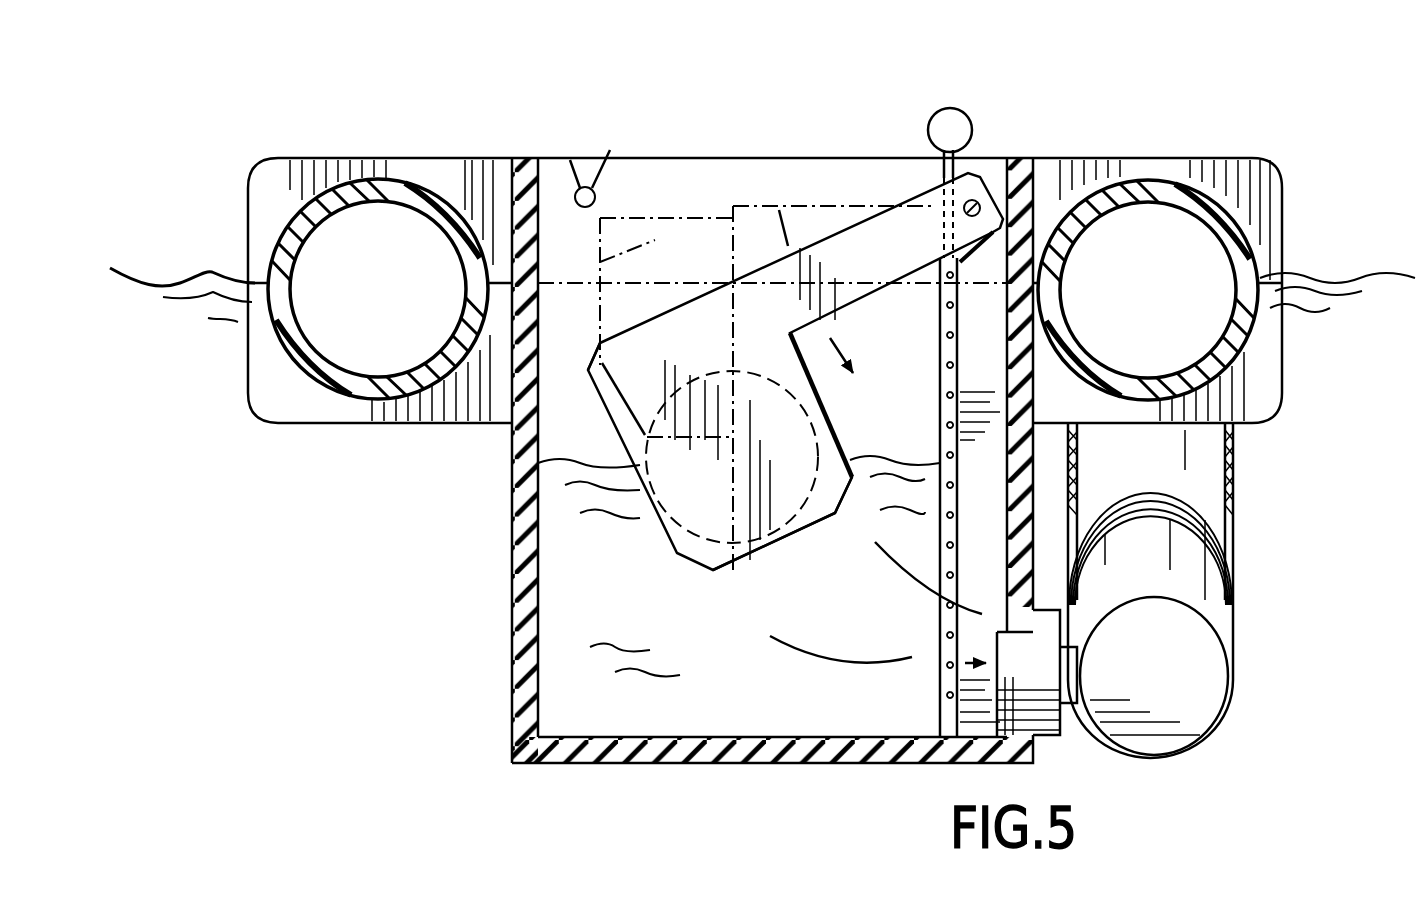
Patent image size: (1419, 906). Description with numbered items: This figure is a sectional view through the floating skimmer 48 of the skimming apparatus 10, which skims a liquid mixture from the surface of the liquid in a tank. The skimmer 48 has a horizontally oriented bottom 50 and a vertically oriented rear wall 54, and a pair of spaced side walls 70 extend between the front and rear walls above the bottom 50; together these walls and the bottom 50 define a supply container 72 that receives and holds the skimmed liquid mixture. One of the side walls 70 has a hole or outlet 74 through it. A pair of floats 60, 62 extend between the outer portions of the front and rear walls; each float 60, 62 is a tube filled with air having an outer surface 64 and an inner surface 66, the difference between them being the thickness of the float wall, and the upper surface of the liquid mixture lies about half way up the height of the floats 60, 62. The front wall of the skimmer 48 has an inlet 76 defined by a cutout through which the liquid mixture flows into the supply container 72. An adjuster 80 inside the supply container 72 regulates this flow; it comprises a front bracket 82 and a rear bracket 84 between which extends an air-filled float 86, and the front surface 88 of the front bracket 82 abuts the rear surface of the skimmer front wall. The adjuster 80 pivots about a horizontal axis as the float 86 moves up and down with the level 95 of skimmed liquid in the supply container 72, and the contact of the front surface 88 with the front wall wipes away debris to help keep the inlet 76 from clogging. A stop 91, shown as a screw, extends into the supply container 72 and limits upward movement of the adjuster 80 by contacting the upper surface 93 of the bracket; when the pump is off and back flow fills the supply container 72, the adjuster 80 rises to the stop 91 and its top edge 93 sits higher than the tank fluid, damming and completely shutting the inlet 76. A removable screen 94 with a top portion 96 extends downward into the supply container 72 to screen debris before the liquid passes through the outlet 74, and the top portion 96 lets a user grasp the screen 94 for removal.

The skimming apparatus 10 is at (1092, 103).
The floating skimmer 48 is at (500, 592).
The bottom 50 is at (690, 752).
The rear wall 54 is at (568, 688).
The float 60 is at (268, 245).
The float 62 is at (1195, 185).
The outer surface 64 is at (386, 180).
The inner surface 66 is at (310, 241).
The side walls 70 is at (512, 548).
The supply container 72 is at (692, 201).
The outlet 74 is at (1040, 750).
The inlet 76 is at (772, 388).
The adjuster 80 is at (692, 568).
The front bracket 82 is at (800, 520).
The rear bracket 84 is at (803, 515).
The float 86 is at (742, 372).
The front surface 88 is at (792, 478).
The stop 91 is at (590, 187).
The top edge 93 is at (638, 340).
The removable screen 94 is at (940, 422).
The level 95 is at (575, 458).
The top portion 96 is at (957, 125).